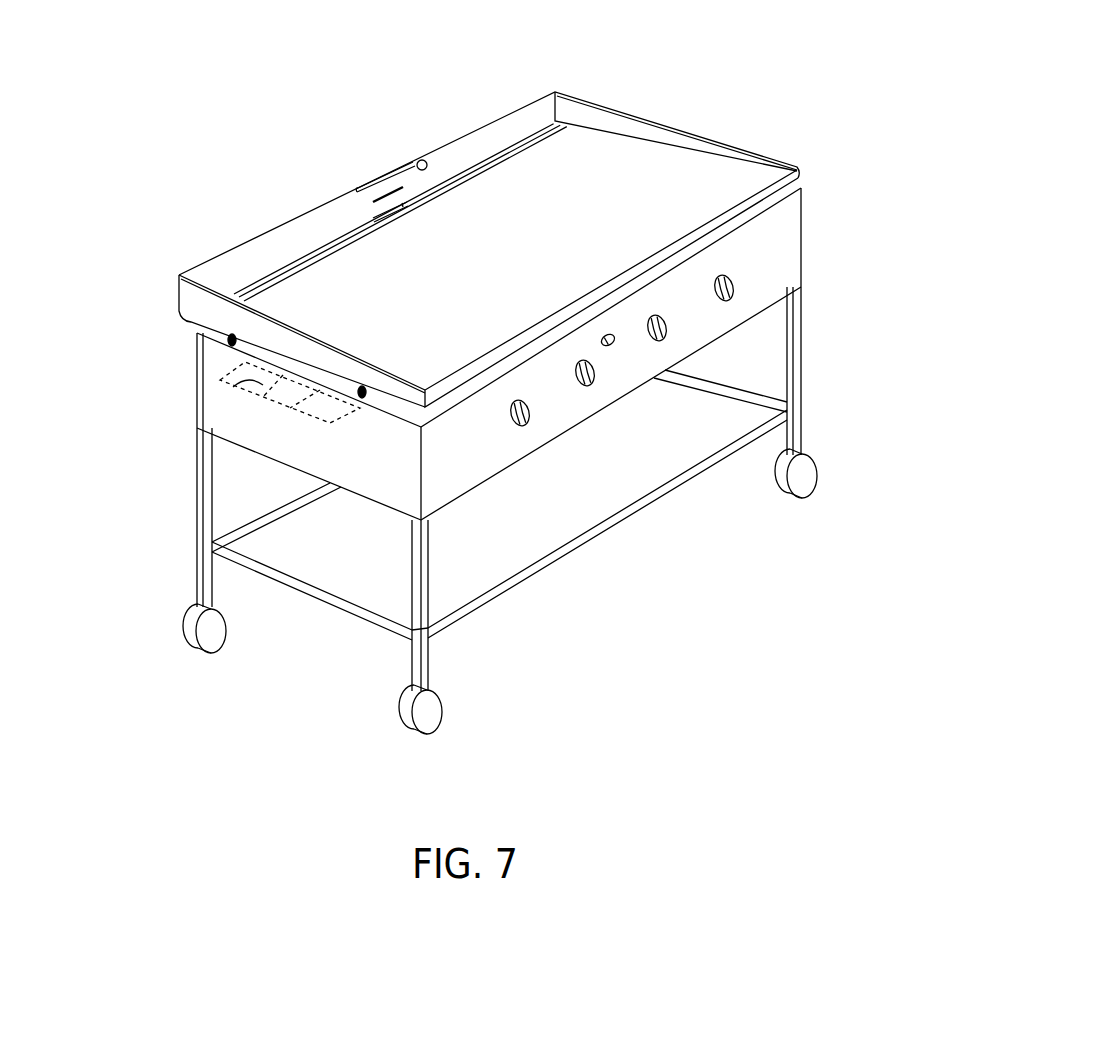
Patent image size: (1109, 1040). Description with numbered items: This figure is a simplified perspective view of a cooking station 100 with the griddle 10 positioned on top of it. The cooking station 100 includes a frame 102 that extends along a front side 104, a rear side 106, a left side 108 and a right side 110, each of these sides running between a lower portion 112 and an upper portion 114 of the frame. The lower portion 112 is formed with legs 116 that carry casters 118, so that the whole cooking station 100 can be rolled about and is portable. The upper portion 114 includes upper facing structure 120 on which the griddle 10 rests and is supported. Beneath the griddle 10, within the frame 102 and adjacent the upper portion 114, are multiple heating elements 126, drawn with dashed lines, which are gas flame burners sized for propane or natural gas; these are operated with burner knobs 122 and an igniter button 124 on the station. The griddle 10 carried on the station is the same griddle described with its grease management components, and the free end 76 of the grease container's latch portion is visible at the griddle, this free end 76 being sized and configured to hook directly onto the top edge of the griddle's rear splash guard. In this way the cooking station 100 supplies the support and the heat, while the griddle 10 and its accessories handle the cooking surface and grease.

The griddle 10 is at (708, 110).
The free end 76 is at (425, 159).
The cooking station 100 is at (857, 112).
The frame 102 is at (498, 605).
The front side 104 is at (678, 637).
The rear side 106 is at (130, 300).
The left side 108 is at (153, 493).
The right side 110 is at (823, 210).
The lower portion 112 is at (848, 349).
The upper portion 114 is at (833, 268).
The legs 116 is at (803, 418).
The casters 118 is at (803, 478).
The upper facing structure 120 is at (225, 336).
The burner knobs 122 is at (516, 424).
The igniter button 124 is at (619, 342).
The heating elements 126 is at (233, 387).